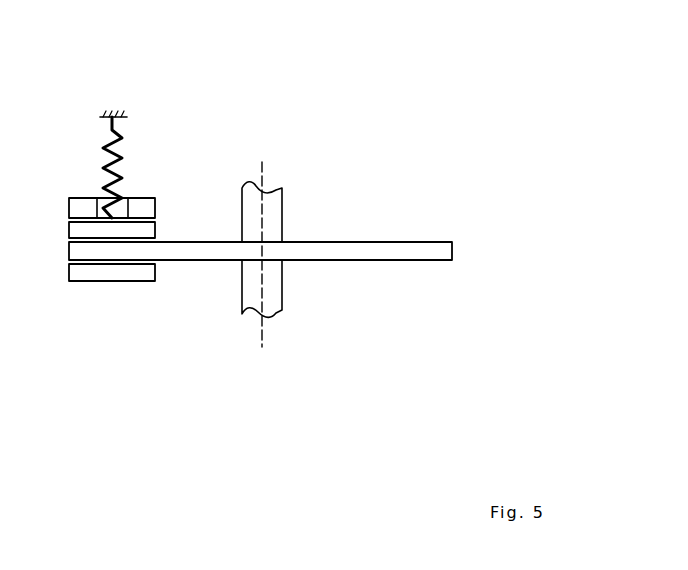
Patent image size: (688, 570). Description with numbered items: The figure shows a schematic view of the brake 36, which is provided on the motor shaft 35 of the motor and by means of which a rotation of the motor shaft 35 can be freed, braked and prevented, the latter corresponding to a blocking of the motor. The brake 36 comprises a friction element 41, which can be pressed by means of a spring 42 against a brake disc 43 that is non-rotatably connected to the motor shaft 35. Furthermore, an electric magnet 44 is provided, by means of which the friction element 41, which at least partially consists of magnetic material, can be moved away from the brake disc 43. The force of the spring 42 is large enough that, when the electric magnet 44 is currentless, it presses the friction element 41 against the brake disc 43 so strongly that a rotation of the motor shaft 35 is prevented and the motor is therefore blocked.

The motor shaft 35 is at (280, 206).
The brake 36 is at (150, 88).
The friction element 41 is at (150, 232).
The spring 42 is at (108, 140).
The brake disc 43 is at (418, 248).
The electric magnet 44 is at (141, 200).